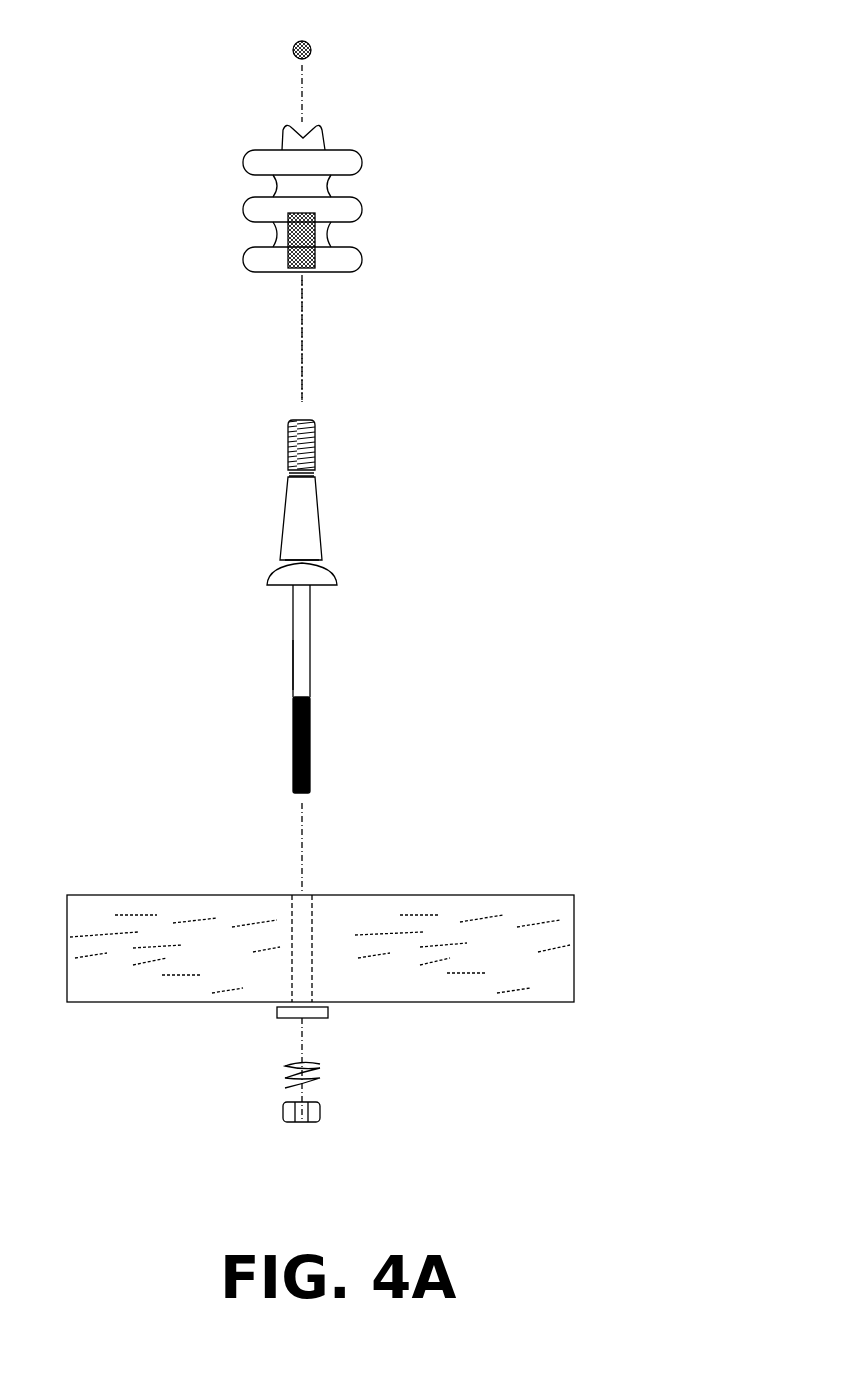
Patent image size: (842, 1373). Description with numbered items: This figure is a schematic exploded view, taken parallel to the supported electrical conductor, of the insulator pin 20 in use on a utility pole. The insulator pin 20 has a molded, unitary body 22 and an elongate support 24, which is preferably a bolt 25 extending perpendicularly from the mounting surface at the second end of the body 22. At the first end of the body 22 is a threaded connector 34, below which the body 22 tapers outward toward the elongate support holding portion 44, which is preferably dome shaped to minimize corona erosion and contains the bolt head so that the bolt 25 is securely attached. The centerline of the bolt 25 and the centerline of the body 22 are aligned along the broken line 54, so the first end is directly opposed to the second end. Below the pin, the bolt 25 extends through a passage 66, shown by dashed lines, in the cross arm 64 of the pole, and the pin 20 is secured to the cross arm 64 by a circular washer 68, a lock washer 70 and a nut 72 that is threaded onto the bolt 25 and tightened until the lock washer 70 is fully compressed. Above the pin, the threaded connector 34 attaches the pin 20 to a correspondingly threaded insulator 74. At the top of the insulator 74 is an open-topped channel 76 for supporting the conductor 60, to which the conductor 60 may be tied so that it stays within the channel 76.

The insulator pin 20 is at (454, 346).
The body 22 is at (377, 504).
The elongate support 24 is at (348, 676).
The bolt 25 is at (297, 668).
The connector 34 is at (318, 433).
The elongate support holding portion 44 is at (334, 572).
The broken line 54 is at (304, 342).
The conductor 60 is at (310, 43).
The cross arm 64 is at (565, 968).
The passage 66 is at (310, 893).
The circular washer 68 is at (330, 1017).
The lock washer 70 is at (322, 1077).
The nut 72 is at (321, 1113).
The insulator 74 is at (396, 171).
The channel 76 is at (308, 123).